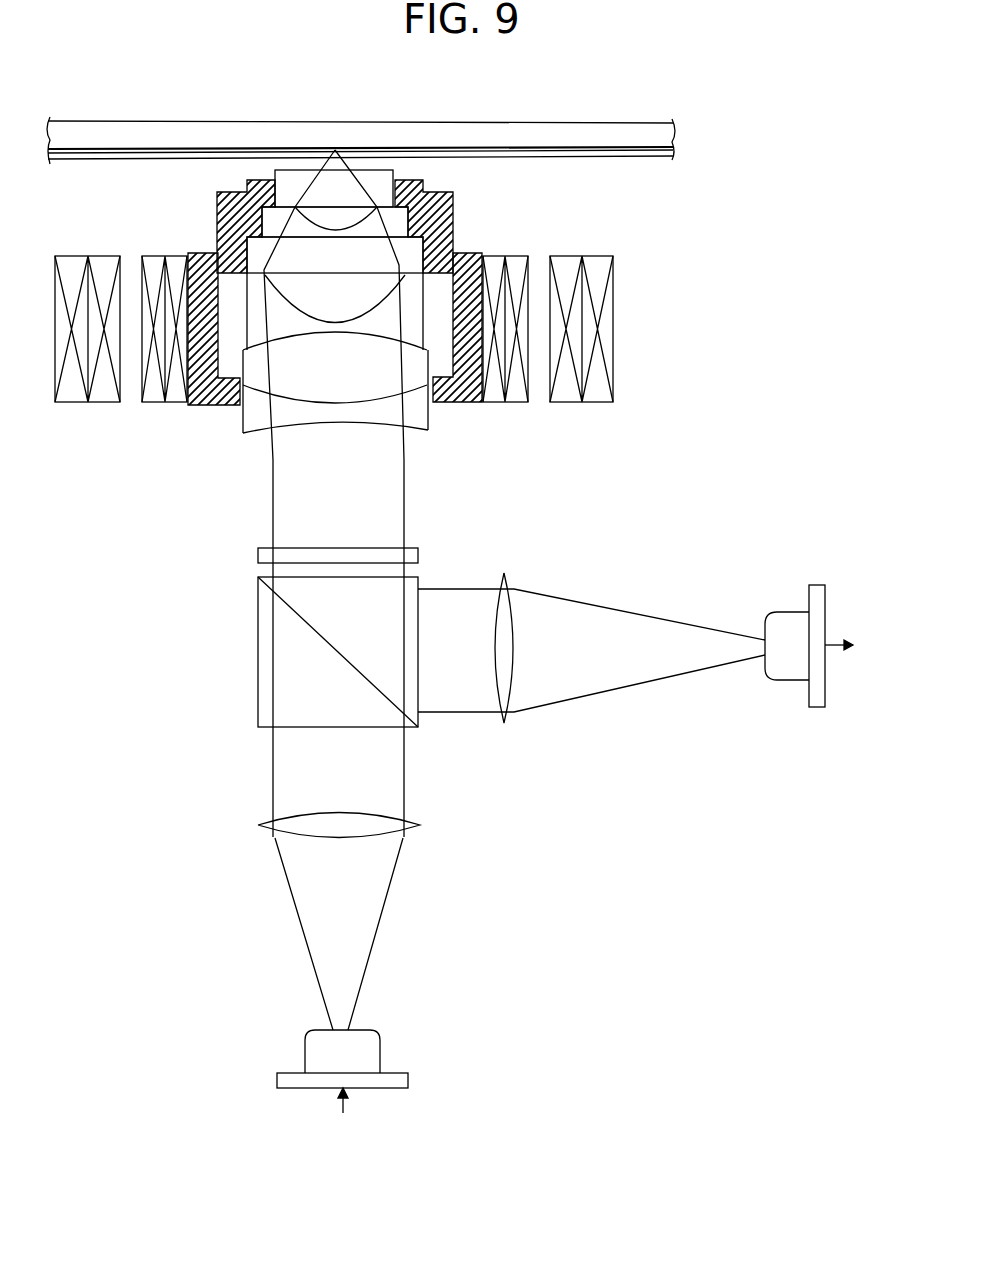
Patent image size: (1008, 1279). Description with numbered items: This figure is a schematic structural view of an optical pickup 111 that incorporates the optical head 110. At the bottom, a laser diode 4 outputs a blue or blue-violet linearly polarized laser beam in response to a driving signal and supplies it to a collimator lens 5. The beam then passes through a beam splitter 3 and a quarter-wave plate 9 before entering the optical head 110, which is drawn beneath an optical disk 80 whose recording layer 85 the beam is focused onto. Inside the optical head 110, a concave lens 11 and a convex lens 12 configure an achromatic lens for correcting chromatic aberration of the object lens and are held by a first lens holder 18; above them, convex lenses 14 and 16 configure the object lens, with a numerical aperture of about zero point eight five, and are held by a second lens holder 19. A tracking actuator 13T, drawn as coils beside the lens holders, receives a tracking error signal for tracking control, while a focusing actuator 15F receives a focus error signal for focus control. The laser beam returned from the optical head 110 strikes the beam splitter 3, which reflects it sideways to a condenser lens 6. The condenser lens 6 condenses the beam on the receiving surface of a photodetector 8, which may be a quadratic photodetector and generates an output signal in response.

The optical disk 80 is at (361, 125).
The recording layer of optical disk 85 is at (447, 142).
The optical head 110 is at (341, 332).
The optical pickup 111 is at (547, 781).
The tracking actuator 13T is at (147, 262).
The focusing actuator 15F is at (177, 397).
The convex lens 16 is at (248, 180).
The second lens holder 19 is at (453, 208).
The convex lens 14 is at (255, 273).
The convex lens 12 is at (415, 352).
The concave lens 11 is at (258, 422).
The first lens holder 18 is at (458, 403).
The ¼ wave plate 9 is at (257, 555).
The beam splitter 3 is at (257, 606).
The condenser lens 6 is at (505, 722).
The photodetector 8 is at (817, 707).
The collimator lens 5 is at (260, 825).
The laser diode 4 is at (277, 1083).